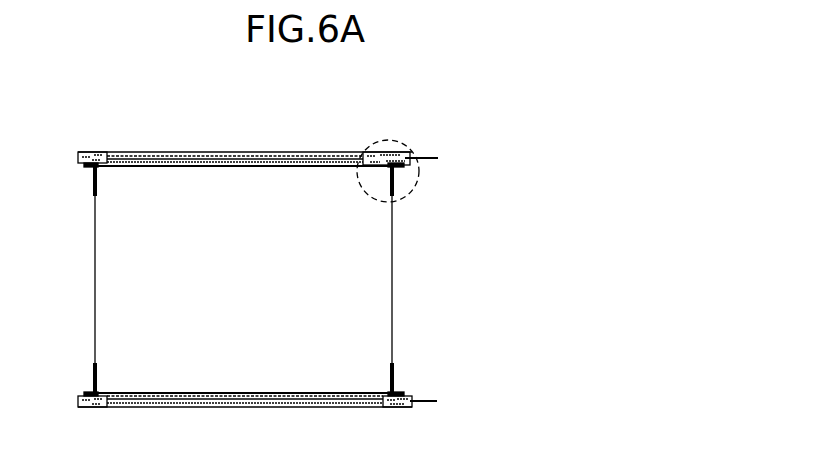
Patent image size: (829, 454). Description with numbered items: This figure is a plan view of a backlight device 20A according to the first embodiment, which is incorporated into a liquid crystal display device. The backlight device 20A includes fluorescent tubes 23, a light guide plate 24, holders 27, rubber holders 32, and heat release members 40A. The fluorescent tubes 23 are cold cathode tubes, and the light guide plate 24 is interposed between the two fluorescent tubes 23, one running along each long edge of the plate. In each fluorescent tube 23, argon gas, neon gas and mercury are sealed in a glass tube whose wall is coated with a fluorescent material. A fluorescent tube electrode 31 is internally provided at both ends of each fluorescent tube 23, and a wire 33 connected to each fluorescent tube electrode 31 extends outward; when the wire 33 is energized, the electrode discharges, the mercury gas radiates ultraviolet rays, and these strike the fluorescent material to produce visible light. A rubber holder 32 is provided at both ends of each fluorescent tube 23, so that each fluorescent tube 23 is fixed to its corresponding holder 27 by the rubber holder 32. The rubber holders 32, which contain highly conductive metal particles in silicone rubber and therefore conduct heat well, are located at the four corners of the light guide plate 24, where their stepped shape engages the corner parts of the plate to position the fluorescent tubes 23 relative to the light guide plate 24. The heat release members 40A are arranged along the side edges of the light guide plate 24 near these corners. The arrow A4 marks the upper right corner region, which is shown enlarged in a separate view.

The backlight device 20A is at (366, 89).
The fluorescent tube 23 is at (148, 156).
The light guide plate 24 is at (383, 288).
The holder 27 is at (272, 156).
The fluorescent tube electrode 31 is at (89, 157).
The rubber holder 32 is at (86, 168).
The wire 33 is at (438, 158).
The heat release member 40A is at (92, 190).
The arrow A4 is at (418, 152).